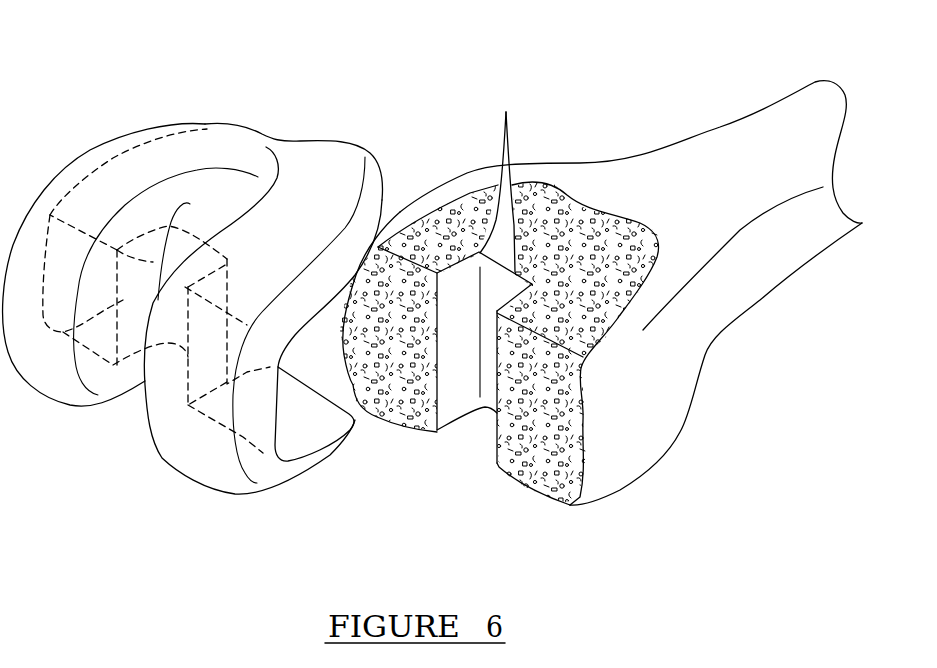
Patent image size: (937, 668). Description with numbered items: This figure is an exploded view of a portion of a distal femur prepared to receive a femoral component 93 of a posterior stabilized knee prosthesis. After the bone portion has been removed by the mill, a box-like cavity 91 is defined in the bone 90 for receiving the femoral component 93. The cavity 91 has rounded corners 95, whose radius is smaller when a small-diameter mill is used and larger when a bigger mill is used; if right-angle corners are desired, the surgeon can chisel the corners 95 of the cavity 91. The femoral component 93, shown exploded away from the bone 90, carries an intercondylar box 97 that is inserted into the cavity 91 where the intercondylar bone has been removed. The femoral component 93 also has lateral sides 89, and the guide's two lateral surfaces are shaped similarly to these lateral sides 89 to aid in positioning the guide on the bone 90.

The lateral sides 89 is at (272, 467).
The femoral component 93 is at (165, 458).
The intercondylar box 97 is at (117, 248).
The bone 90 is at (568, 164).
The box-like cavity 91 is at (476, 322).
The rounded corners 95 is at (506, 112).